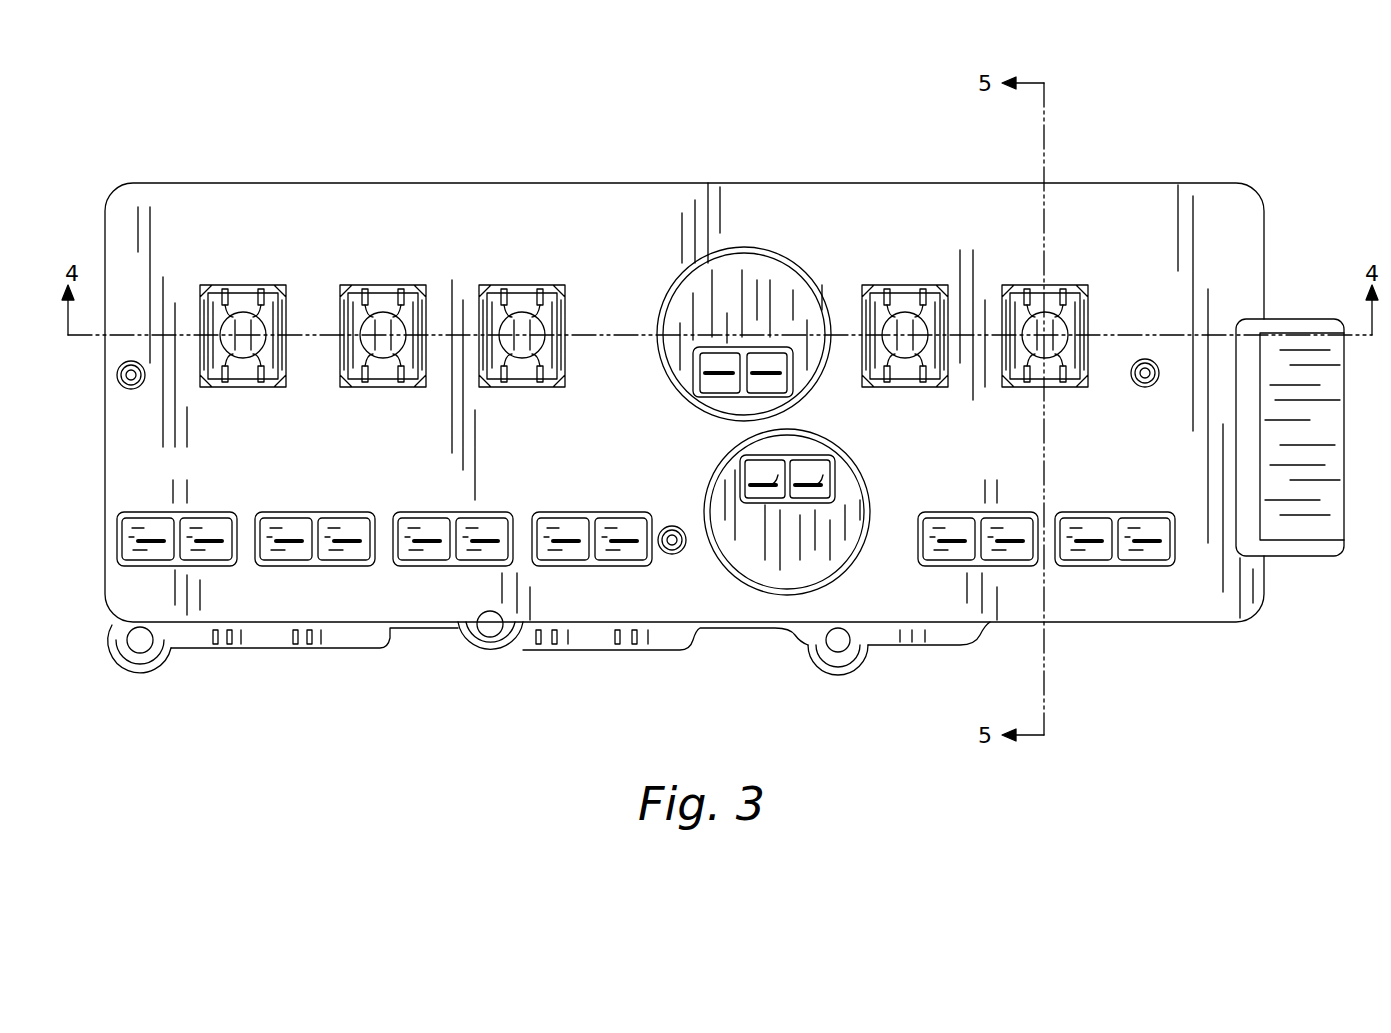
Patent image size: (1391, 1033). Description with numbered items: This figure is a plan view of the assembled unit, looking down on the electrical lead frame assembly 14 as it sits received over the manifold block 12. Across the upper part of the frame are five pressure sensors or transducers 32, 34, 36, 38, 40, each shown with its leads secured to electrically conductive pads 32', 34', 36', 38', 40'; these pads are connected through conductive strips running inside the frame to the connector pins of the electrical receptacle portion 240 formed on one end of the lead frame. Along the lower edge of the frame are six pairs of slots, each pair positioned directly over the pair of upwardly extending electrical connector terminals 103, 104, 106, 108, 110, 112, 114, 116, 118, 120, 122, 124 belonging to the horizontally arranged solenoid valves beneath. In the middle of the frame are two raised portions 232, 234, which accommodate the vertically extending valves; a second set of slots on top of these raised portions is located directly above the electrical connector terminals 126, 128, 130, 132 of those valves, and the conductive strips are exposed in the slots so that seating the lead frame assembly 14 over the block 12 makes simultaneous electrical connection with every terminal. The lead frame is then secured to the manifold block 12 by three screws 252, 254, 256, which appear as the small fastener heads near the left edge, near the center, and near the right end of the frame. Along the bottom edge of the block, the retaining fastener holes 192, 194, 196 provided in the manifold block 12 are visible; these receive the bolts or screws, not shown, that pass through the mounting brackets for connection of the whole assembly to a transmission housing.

The manifold block 12 is at (260, 650).
The electrical lead frame assembly 14 is at (752, 180).
The pressure transducer 32 is at (243, 256).
The pressure transducer 34 is at (383, 256).
The pressure transducer 36 is at (522, 256).
The pressure transducer 38 is at (905, 256).
The pressure transducer 40 is at (1078, 326).
The electrically conductive pad 32' is at (234, 320).
The electrically conductive pad 34' is at (374, 320).
The electrically conductive pad 36' is at (513, 320).
The electrically conductive pad 38' is at (896, 320).
The electrically conductive pad 40' is at (1043, 324).
The electrical connector terminal 103 is at (162, 543).
The electrical connector terminal 104 is at (203, 543).
The electrical connector terminal 106 is at (290, 543).
The electrical connector terminal 108 is at (342, 543).
The electrical connector terminal 110 is at (428, 543).
The electrical connector terminal 112 is at (466, 543).
The electrical connector terminal 114 is at (567, 543).
The electrical connector terminal 116 is at (605, 543).
The electrical connector terminal 118 is at (953, 543).
The electrical connector terminal 120 is at (1010, 543).
The electrical connector terminal 122 is at (1090, 543).
The electrical connector terminal 124 is at (1148, 543).
The electrical connector terminal 126 is at (770, 482).
The electrical connector terminal 128 is at (812, 483).
The electrical connector terminal 130 is at (720, 380).
The electrical connector terminal 132 is at (765, 380).
The retaining fastener hole 192 is at (150, 630).
The retaining fastener hole 194 is at (495, 650).
The retaining fastener hole 196 is at (838, 652).
The raised portion 232 is at (757, 590).
The raised portion 234 is at (670, 290).
The electrical receptacle portion 240 is at (1320, 560).
The screw 252 is at (135, 390).
The screw 254 is at (673, 554).
The screw 256 is at (1150, 358).